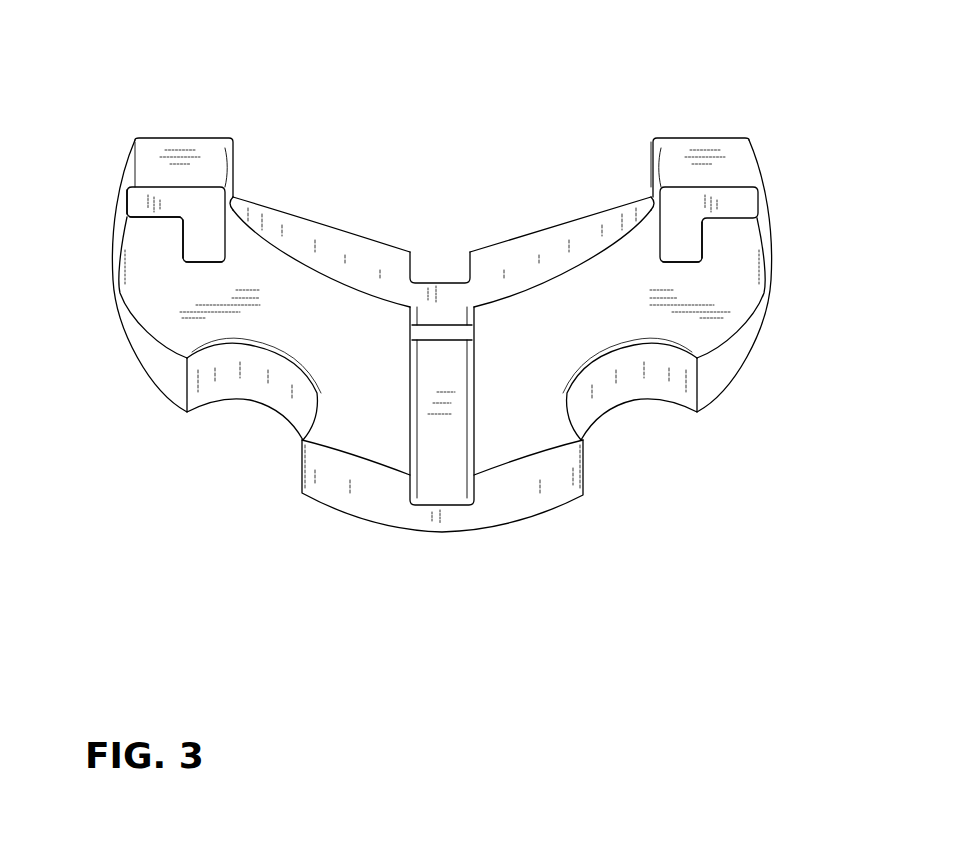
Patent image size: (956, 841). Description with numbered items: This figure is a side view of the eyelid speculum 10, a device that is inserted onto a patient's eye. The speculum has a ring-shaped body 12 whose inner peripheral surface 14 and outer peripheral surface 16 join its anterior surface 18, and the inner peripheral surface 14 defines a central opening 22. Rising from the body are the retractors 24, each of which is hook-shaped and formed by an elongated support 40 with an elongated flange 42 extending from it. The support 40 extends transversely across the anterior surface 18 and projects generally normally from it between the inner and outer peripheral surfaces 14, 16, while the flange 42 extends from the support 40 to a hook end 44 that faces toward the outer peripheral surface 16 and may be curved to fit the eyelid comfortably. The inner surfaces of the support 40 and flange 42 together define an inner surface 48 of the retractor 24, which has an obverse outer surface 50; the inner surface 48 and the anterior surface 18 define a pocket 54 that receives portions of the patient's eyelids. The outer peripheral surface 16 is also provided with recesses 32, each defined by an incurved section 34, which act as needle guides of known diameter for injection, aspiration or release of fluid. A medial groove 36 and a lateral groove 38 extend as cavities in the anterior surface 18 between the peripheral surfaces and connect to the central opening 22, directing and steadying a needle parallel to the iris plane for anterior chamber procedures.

The eyelid speculum 10 is at (184, 32).
The body 12 is at (130, 370).
The inner peripheral surface 14 is at (370, 263).
The outer peripheral surface 16 is at (517, 493).
The anterior surface 18 is at (370, 432).
The central opening 22 is at (491, 287).
The retractor 24 is at (180, 131).
The recess 32 is at (272, 443).
The incurved section 34 is at (273, 383).
The medial groove 36 is at (443, 283).
The lateral groove 38 is at (443, 467).
The support 40 is at (203, 258).
The flange 42 is at (143, 197).
The hook end 44 is at (127, 205).
The inner surface 48 is at (133, 223).
The outer surface 50 is at (143, 157).
The pocket 54 is at (161, 225).